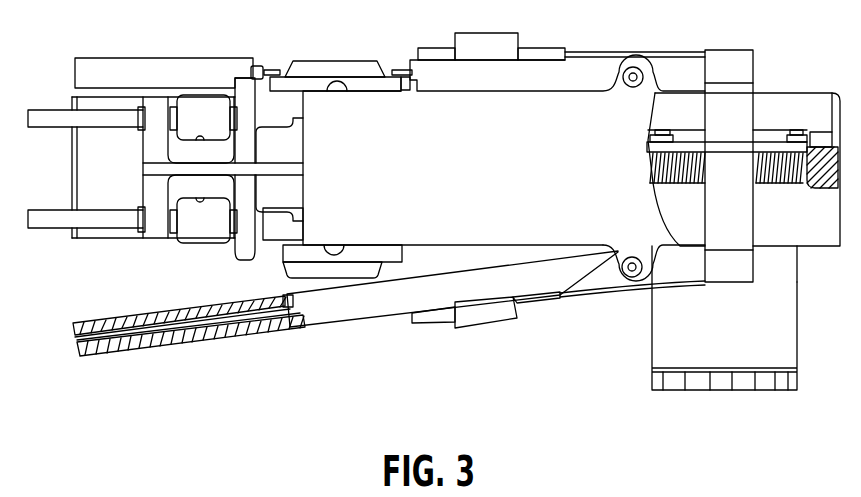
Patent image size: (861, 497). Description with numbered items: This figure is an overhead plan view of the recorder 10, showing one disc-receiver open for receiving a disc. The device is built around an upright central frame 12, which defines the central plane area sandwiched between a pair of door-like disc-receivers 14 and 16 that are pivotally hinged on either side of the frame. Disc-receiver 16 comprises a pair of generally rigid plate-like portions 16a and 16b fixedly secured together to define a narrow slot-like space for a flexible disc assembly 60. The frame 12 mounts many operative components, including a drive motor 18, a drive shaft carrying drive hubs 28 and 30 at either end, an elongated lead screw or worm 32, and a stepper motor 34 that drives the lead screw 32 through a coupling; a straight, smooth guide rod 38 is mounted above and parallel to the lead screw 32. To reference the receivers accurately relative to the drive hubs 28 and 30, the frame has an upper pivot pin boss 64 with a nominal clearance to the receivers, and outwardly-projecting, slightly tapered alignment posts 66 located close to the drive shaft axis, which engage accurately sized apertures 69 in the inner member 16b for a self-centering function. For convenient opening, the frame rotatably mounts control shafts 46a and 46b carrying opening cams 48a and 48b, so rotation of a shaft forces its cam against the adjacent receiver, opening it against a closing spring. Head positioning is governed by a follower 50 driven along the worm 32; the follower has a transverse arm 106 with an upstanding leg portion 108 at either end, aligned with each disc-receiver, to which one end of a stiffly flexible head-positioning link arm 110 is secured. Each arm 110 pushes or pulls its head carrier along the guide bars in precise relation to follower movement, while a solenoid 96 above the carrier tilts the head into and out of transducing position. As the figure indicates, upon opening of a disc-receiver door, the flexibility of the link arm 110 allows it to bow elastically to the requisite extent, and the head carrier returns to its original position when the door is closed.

The recorder 10 is at (768, 57).
The upright central frame 12 is at (378, 132).
The disc-receiver 14 is at (78, 62).
The disc-receiver 16 is at (333, 323).
The plate-like portion 16a is at (252, 330).
The plate-like portion 16b is at (127, 315).
The drive motor 18 is at (736, 340).
The drive hub 28 is at (287, 272).
The drive hub 30 is at (330, 62).
The lead screw 32 is at (782, 187).
The stepper motor 34 is at (93, 160).
The guide rod 38 is at (758, 147).
The shaft 46a is at (55, 115).
The shaft 46b is at (55, 222).
The opening cam 48a is at (200, 102).
The opening cam 48b is at (193, 233).
The follower 50 is at (755, 270).
The flexible disc assembly 60 is at (262, 62).
The upper pivot pin boss 64 is at (620, 84).
The alignment post 66 is at (245, 82).
The aperture 69 is at (233, 300).
The solenoid 96 is at (505, 38).
The transverse arm 106 is at (738, 112).
The upstanding leg portion 108 is at (722, 55).
The head-positioning link arm 110 is at (655, 50).